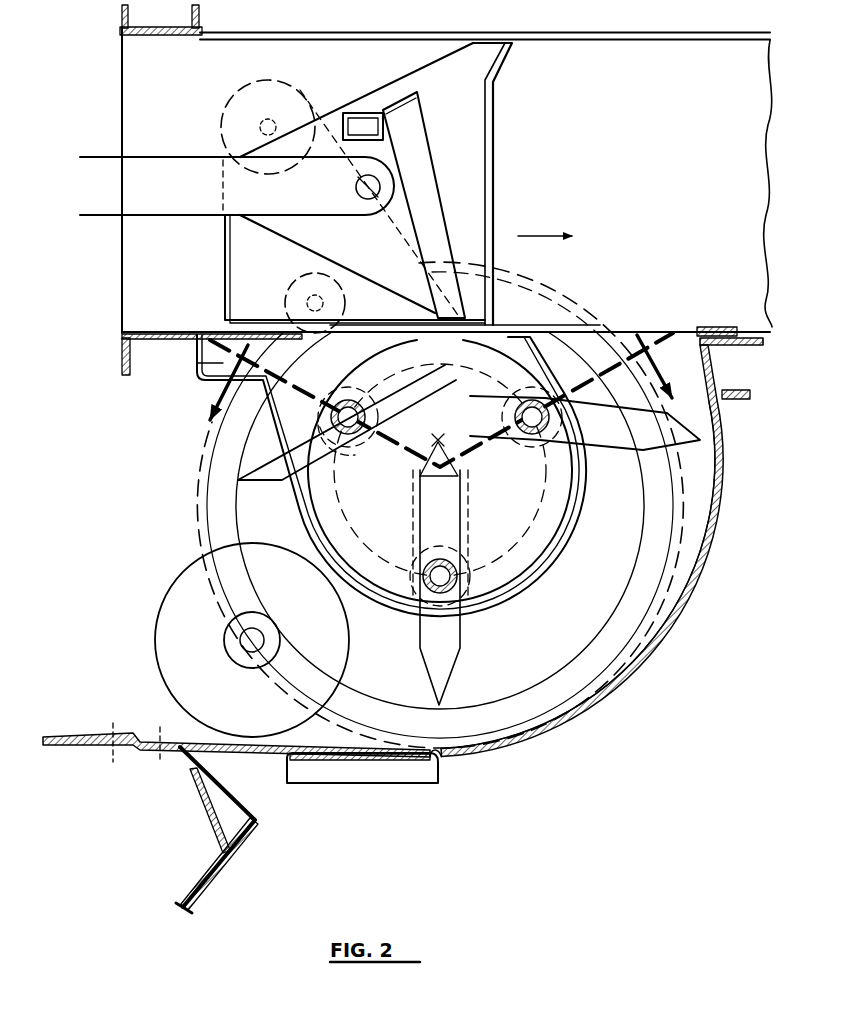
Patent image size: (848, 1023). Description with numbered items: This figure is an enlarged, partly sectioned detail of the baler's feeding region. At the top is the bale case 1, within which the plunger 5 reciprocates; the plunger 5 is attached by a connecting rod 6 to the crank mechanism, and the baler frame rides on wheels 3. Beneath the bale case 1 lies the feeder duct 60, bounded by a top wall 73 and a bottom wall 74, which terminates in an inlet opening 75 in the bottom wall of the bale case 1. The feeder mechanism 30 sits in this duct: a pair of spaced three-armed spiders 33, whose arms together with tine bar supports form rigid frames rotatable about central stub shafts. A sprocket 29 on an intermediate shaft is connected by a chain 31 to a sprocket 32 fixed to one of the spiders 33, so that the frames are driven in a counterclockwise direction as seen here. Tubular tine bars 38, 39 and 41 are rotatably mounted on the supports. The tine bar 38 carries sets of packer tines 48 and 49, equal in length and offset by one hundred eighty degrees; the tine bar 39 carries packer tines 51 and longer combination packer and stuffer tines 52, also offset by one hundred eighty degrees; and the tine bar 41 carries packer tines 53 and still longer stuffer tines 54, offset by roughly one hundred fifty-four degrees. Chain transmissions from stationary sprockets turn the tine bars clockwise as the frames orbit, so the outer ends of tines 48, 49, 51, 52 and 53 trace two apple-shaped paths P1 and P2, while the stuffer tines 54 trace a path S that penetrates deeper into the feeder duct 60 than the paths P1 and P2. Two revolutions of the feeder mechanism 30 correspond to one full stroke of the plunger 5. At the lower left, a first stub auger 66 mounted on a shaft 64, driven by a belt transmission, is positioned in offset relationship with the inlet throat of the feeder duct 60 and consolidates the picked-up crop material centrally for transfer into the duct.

The bale case 1 is at (608, 30).
The plunger 5 is at (494, 140).
The connecting rod 6 is at (183, 168).
The sprocket 29 is at (288, 105).
The chain 31 is at (427, 197).
The wheels 3 is at (430, 400).
The inlet opening 75 is at (636, 320).
The feeder mechanism 30 is at (196, 467).
The packer tines 51 is at (267, 470).
The stuffer tines 54 is at (678, 443).
The packer tines 48 is at (465, 665).
The combination packer and stuffer tines 52 is at (403, 395).
The packer tines 53 is at (413, 423).
The tine bar 39 is at (337, 463).
The three-armed spiders 33 is at (400, 473).
The tine bar 38 is at (465, 610).
The packer tines 49 is at (443, 513).
The tine bar 41 is at (568, 475).
The sprocket 32 is at (570, 512).
The top wall 73 is at (560, 562).
The bottom wall 74 is at (605, 700).
The stuffer path S is at (716, 507).
The path of movement P1 is at (648, 653).
The path of movement P2 is at (665, 592).
The stub auger 66 is at (185, 684).
The shaft 64 is at (240, 660).
The feeder duct 60 is at (150, 705).